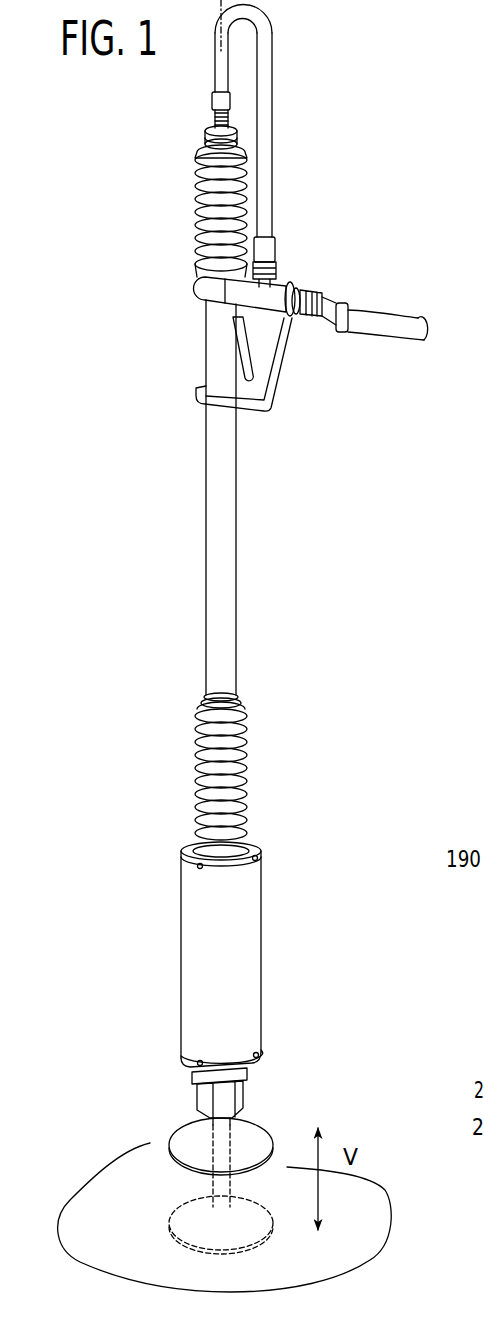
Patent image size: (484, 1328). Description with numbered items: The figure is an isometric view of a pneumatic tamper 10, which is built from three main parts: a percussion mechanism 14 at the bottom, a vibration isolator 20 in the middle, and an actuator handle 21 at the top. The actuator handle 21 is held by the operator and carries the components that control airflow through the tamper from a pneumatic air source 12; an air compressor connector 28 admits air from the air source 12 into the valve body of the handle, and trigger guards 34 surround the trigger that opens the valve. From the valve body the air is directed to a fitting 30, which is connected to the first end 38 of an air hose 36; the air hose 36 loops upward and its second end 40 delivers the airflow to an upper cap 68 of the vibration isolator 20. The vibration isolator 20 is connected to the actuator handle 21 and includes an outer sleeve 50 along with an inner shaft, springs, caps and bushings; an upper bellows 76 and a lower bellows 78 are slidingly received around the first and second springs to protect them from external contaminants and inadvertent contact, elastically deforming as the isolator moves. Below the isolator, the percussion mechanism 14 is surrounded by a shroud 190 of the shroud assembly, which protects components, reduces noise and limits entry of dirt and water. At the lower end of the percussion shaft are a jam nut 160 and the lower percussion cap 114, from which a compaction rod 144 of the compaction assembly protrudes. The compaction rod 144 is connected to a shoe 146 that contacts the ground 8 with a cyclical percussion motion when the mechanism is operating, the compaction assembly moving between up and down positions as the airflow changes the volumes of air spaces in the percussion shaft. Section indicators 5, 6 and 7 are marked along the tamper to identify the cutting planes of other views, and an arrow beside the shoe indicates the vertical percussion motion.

The pneumatic tamper 10 is at (383, 95).
The pneumatic air source 12 is at (414, 318).
The percussion mechanism 14 is at (115, 905).
The vibration isolator 20 is at (107, 300).
The actuator handle 21 is at (323, 396).
The air compressor connector 28 is at (316, 300).
The fitting 30 is at (276, 272).
The trigger guards 34 is at (240, 364).
The air hose 36 is at (268, 50).
The first end 38 is at (266, 240).
The second end 40 is at (216, 80).
The outer sleeve 50 is at (206, 559).
The upper cap 68 is at (201, 143).
The upper bellows 76 is at (198, 212).
The lower bellows 78 is at (248, 771).
The section line 5 is at (223, 435).
The section line 6 is at (220, 673).
The section line 7 is at (220, 857).
The ground 8 is at (130, 1221).
The lower percussion cap 114 is at (207, 1100).
The compaction rod 144 is at (216, 1118).
The shoe 146 is at (250, 1135).
The jam nut 160 is at (190, 1070).
The shroud 190 is at (248, 992).